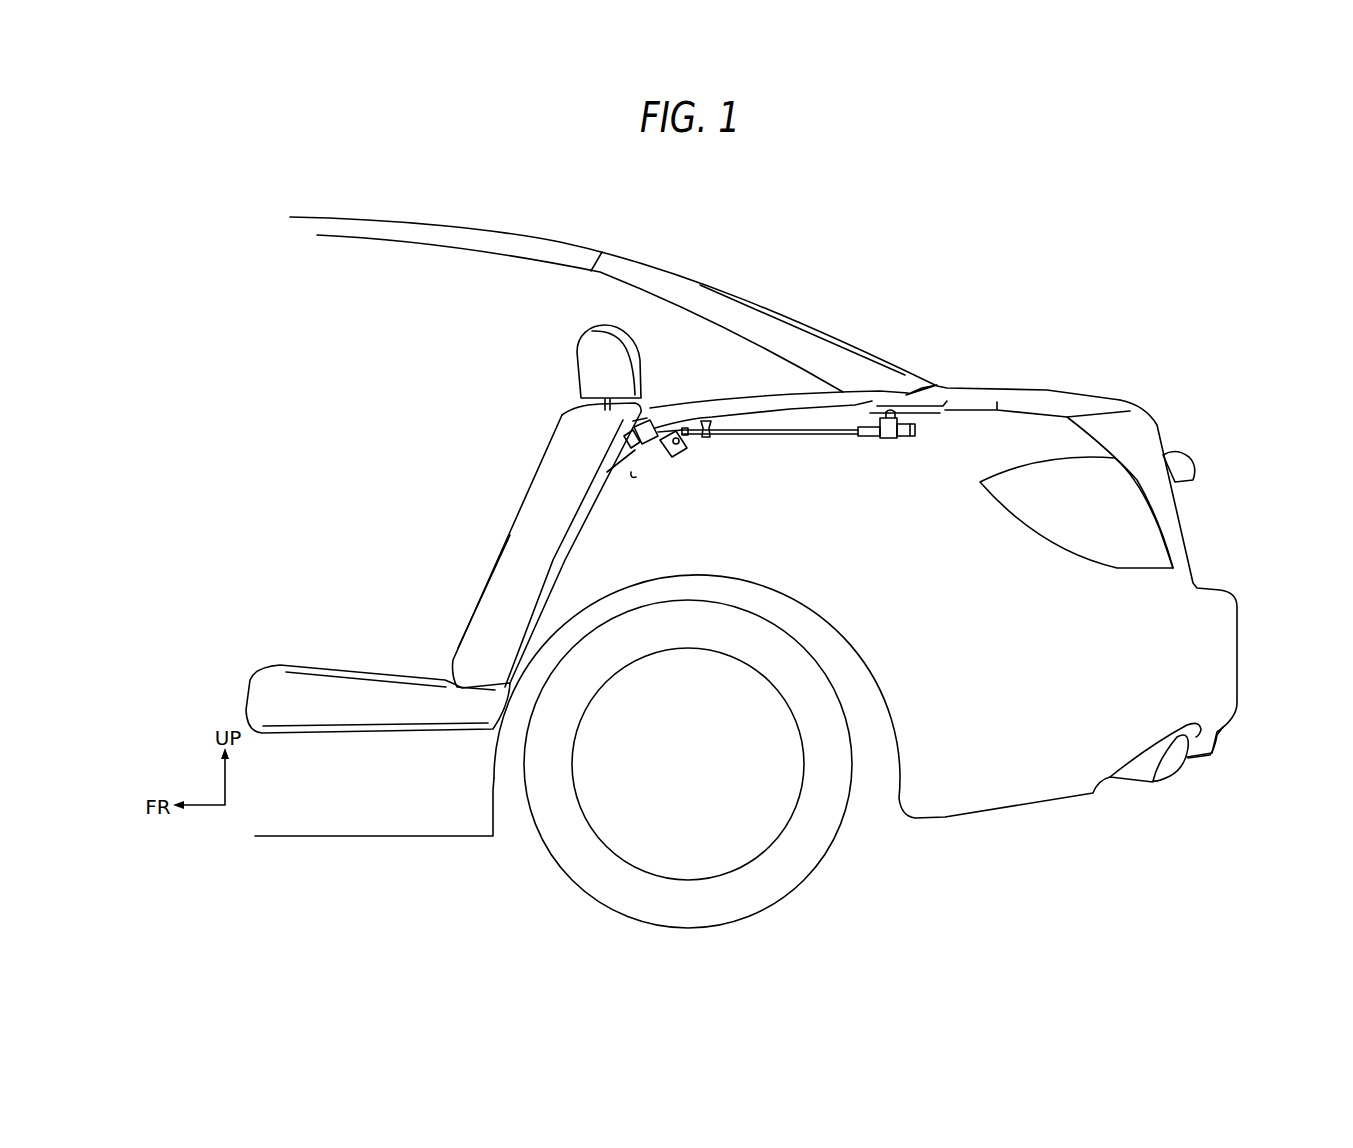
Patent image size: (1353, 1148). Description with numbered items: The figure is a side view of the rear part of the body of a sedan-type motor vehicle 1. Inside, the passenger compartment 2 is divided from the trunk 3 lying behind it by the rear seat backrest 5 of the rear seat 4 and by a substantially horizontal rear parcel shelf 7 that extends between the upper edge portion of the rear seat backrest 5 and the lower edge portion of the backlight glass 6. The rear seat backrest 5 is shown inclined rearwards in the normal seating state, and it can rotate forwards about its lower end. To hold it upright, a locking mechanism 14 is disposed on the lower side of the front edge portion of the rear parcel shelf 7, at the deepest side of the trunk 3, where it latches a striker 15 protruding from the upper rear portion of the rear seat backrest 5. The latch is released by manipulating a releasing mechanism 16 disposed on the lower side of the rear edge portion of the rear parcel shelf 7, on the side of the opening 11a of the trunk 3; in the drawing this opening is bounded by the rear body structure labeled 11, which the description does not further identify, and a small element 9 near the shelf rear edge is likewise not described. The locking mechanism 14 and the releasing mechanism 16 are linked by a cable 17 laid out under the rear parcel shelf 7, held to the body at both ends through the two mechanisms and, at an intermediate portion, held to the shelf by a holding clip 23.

The vehicle 1 is at (1063, 257).
The passenger compartment 2 is at (463, 320).
The trunk 3 is at (1017, 433).
The rear seat 4 is at (547, 507).
The rear seat backrest 5 is at (517, 482).
The backlight glass 6 is at (805, 322).
The rear parcel shelf 7 is at (725, 395).
The bracket 9 is at (907, 393).
The tailgate 11 is at (1125, 395).
The opening 11a is at (997, 401).
The locking mechanism 14 is at (650, 456).
The striker 15 is at (643, 448).
The releasing mechanism 16 is at (884, 447).
The cable 17 is at (793, 446).
The holding clip 23 is at (705, 440).